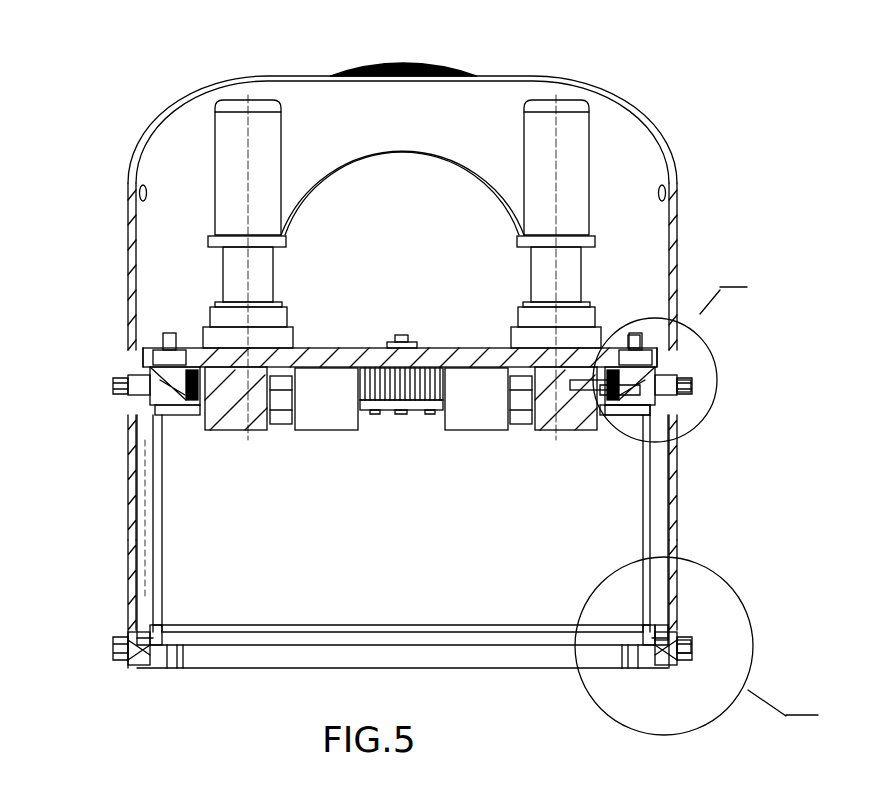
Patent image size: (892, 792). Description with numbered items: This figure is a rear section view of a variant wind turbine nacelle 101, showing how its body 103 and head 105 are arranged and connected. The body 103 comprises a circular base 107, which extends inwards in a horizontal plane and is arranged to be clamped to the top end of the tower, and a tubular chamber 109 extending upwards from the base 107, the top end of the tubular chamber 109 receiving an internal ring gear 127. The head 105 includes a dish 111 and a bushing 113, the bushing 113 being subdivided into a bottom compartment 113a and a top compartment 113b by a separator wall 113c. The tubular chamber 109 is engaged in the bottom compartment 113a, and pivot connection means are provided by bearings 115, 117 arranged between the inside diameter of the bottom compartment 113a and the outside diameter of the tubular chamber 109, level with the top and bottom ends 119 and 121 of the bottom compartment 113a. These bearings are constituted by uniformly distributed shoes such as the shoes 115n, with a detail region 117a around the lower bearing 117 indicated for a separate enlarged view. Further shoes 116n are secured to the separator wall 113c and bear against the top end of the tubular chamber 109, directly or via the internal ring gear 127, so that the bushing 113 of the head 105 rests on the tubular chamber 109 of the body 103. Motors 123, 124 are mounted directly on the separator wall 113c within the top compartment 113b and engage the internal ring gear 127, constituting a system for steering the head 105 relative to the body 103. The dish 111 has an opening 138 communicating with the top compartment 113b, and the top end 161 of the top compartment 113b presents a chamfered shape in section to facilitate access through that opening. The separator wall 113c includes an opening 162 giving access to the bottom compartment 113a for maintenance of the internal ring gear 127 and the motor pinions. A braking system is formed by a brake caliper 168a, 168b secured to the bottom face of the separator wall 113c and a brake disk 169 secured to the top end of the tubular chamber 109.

The nacelle 101 is at (704, 192).
The body 103 is at (152, 556).
The head 105 is at (128, 521).
The base 107 is at (175, 670).
The tubular chamber 109 is at (163, 542).
The dish 111 is at (400, 62).
The bushing 113 is at (678, 477).
The bottom compartment 113a is at (678, 540).
The top compartment 113b is at (678, 235).
The separator wall 113c is at (488, 362).
The bearing 115 is at (696, 358).
The shoes 115n is at (686, 391).
The shoes 116n is at (633, 342).
The bearing 117 is at (692, 673).
The fastener head 117a is at (690, 646).
The top end 119 is at (672, 413).
The bottom end 121 is at (677, 624).
The motor 123 is at (580, 127).
The motor 124 is at (238, 113).
The internal ring gear 127 is at (406, 388).
The opening 138 is at (393, 150).
The top end 161 is at (652, 131).
The opening 162 is at (333, 357).
The brake caliper 168a is at (540, 430).
The brake caliper 168b is at (258, 428).
The brake disk 169 is at (606, 409).